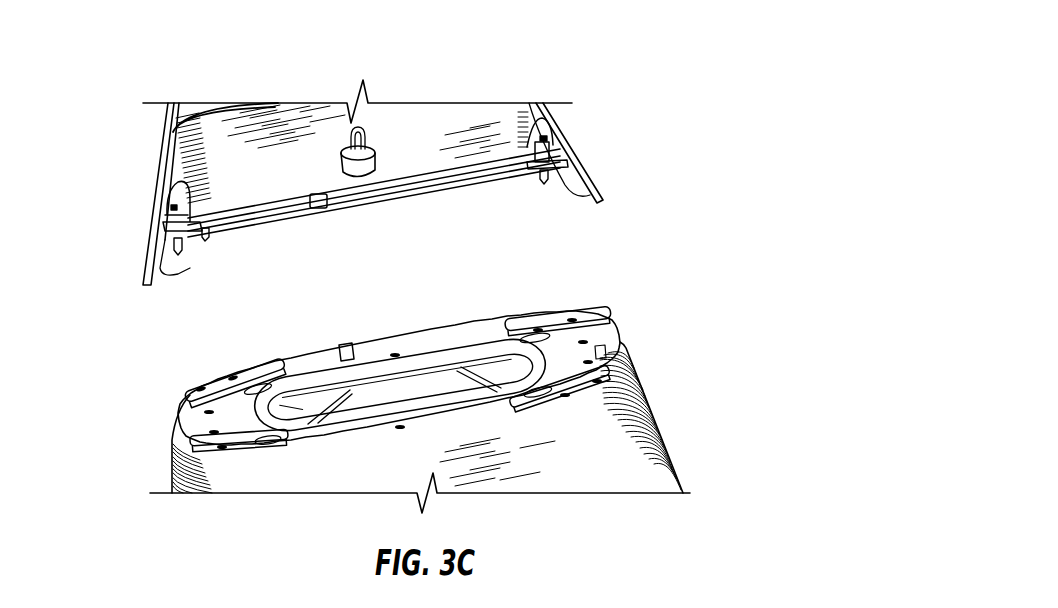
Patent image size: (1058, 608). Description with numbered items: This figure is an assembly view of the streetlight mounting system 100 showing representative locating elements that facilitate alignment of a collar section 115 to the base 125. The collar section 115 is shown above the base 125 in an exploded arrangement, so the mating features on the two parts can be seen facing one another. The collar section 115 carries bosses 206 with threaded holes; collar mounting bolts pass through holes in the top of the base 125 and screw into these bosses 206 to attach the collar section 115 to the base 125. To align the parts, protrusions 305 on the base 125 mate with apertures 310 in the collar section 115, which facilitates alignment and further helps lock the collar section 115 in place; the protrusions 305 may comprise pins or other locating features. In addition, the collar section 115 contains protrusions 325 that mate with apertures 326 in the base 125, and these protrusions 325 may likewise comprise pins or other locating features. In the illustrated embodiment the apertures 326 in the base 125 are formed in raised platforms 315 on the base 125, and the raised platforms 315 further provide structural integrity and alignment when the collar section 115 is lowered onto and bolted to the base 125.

The streetlight mounting system 100 is at (605, 62).
The collar section 115 is at (162, 139).
The base 125 is at (643, 428).
The boss 206 is at (173, 197).
The protrusion 305 is at (343, 344).
The aperture 310 is at (317, 210).
The raised platform 315 is at (628, 341).
The protrusion 325 is at (205, 243).
The aperture 326 is at (233, 377).